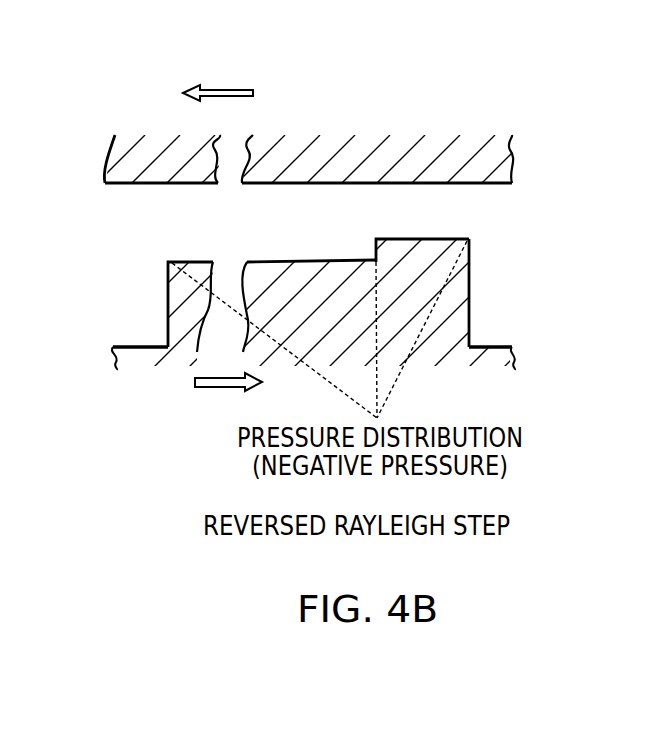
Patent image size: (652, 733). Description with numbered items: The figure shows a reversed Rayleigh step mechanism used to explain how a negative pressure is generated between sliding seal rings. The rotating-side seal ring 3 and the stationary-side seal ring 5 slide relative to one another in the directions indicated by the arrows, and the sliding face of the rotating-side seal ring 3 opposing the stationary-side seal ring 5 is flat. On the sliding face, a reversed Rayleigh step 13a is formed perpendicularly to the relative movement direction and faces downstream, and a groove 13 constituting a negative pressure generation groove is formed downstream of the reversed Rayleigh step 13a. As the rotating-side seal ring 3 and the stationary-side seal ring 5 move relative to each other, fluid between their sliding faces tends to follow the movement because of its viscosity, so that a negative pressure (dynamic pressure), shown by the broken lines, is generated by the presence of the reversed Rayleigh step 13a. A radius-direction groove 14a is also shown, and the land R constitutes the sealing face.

The rotating-side seal ring 3 is at (433, 138).
The stationary-side seal ring 5 is at (172, 347).
The groove 13 is at (259, 262).
The reversed Rayleigh step 13a is at (376, 252).
The radius-direction groove 14a is at (113, 347).
The land R is at (433, 237).